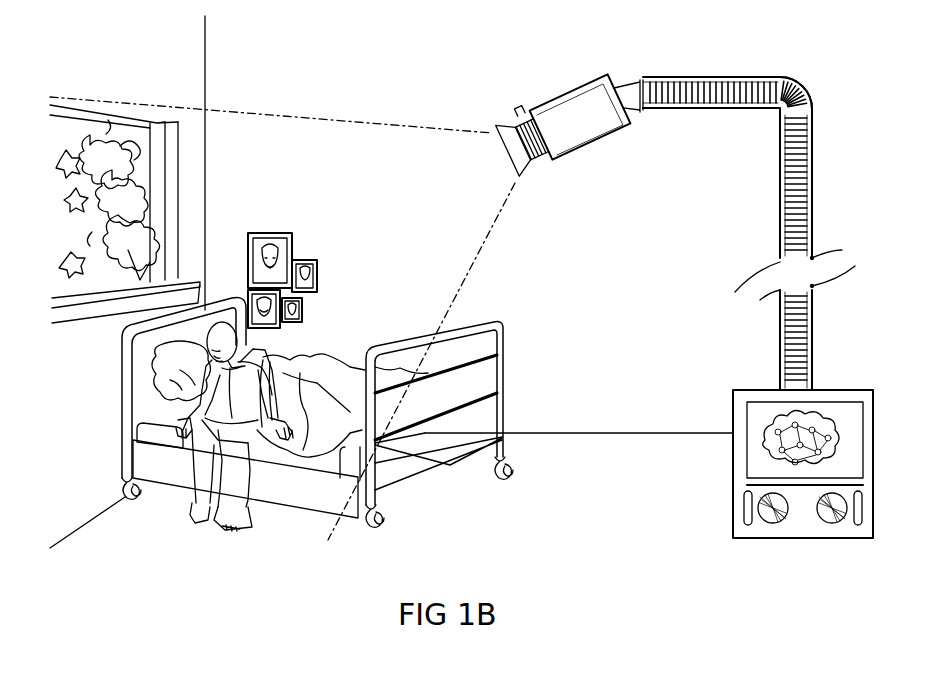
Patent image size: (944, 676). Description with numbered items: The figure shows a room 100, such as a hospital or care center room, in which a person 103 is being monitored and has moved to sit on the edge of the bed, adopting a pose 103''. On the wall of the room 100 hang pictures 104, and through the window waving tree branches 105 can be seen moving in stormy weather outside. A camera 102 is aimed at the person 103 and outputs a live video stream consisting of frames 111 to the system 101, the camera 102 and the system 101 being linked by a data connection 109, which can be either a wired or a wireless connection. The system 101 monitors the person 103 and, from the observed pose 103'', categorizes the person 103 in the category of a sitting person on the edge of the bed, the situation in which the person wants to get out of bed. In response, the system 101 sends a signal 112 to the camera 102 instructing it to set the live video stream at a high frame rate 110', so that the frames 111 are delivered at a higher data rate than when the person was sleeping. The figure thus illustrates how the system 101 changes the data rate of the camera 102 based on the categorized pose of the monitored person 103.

The room 100 is at (488, 66).
The system 101 is at (738, 465).
The camera 102 is at (558, 88).
The person 103 is at (230, 425).
The pose 103'' is at (267, 362).
The pictures 104 is at (318, 282).
The waving tree branches 105 is at (90, 232).
The data connection 109 is at (630, 82).
The frame rate 110' is at (754, 188).
The frames 111 is at (812, 105).
The signal 112 is at (812, 352).